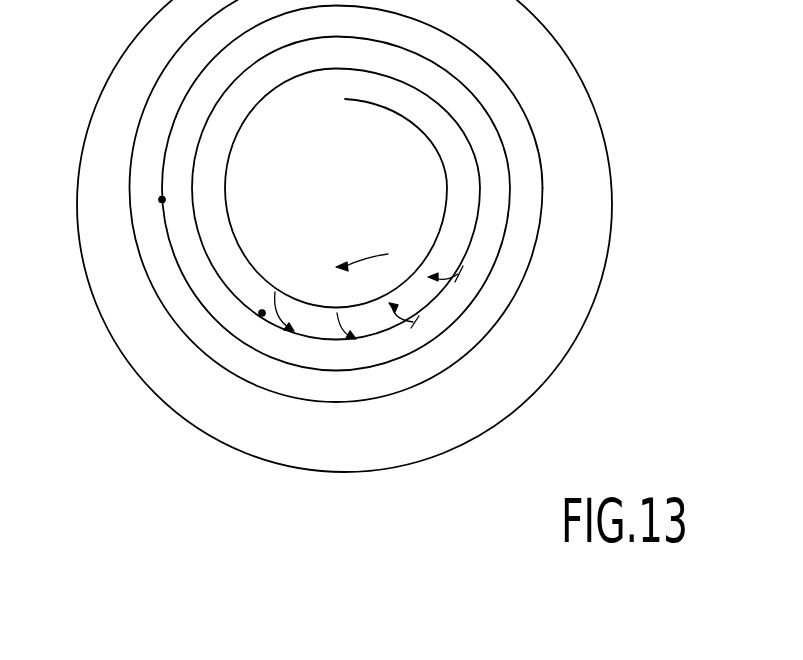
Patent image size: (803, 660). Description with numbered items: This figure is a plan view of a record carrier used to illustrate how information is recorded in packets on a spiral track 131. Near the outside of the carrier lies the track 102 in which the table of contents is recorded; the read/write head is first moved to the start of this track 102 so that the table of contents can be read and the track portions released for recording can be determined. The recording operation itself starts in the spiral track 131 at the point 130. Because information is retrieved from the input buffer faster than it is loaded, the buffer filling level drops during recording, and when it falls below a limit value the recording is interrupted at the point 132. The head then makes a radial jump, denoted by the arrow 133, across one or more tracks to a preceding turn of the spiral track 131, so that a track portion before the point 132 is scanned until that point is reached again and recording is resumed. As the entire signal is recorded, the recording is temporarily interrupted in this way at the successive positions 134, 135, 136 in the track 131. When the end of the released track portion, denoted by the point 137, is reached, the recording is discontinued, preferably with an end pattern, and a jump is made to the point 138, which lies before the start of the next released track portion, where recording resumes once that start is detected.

The track 102 is at (593, 100).
The recording start point 130 is at (484, 214).
The spiral track 131 is at (523, 119).
The interruption point 132 is at (457, 279).
The jump arrow 133 is at (446, 270).
The interruption position 134 is at (415, 322).
The interruption position 135 is at (357, 342).
The interruption position 136 is at (296, 337).
The end point of released track portion 137 is at (262, 313).
The jump target point 138 is at (162, 200).